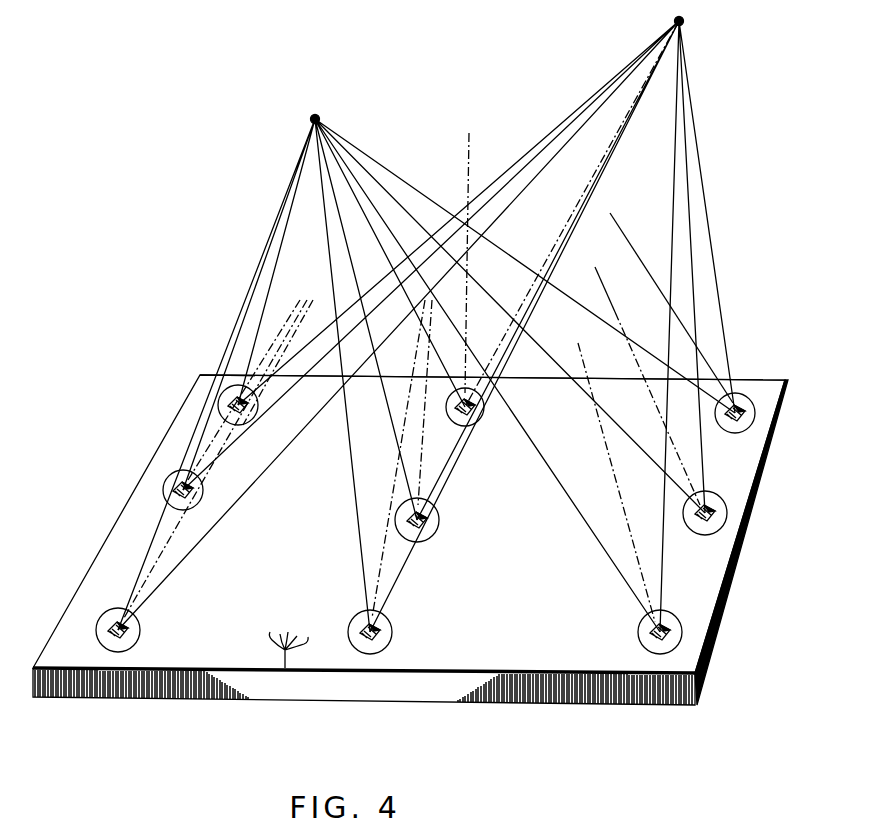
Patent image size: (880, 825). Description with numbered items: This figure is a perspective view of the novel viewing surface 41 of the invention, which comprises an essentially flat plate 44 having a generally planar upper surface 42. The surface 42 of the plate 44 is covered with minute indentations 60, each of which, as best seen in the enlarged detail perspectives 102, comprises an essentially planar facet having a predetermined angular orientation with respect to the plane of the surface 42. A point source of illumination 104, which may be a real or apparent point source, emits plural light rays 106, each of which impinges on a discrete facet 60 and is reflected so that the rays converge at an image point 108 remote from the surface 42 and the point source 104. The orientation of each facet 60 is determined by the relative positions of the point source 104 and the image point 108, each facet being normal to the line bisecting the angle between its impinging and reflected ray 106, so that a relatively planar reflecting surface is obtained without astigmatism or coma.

The viewing surface 41 is at (578, 706).
The upper surface of plate 42 is at (62, 656).
The flat plate 44 is at (686, 700).
The indentations 60 is at (227, 400).
The enlarged detail perspectives 102 is at (236, 386).
The point source of illumination 104 is at (684, 20).
The light rays 106 is at (278, 276).
The image point 108 is at (318, 117).